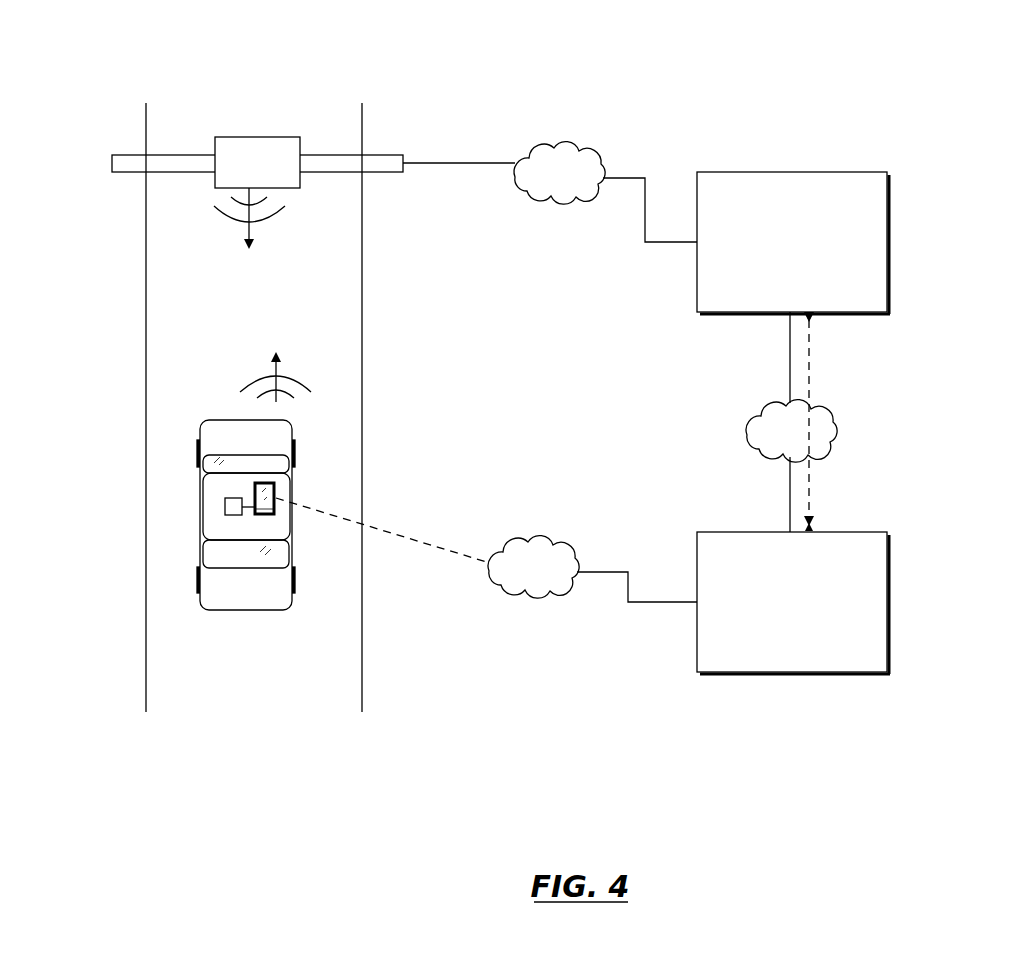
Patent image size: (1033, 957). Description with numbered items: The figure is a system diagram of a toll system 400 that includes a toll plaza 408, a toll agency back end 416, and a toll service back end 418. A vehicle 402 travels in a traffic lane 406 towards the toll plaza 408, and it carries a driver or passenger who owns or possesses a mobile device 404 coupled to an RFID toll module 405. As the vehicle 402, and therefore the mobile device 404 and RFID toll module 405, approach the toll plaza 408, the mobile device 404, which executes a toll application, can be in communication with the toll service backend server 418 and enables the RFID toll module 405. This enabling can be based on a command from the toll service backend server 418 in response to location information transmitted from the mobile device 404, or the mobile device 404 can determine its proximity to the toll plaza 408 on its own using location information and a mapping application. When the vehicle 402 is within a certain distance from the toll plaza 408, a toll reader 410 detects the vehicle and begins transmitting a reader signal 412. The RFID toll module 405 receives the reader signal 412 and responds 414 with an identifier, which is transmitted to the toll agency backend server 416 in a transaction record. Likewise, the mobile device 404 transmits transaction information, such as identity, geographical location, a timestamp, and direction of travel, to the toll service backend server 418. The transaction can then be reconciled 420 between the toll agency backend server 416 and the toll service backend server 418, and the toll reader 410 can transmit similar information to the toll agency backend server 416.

The toll system 400 is at (681, 76).
The vehicle 402 is at (198, 482).
The mobile device 404 is at (277, 489).
The RFID toll module 405 is at (225, 500).
The traffic lane 406 is at (232, 712).
The toll plaza 408 is at (138, 154).
The toll reader 410 is at (250, 137).
The reader signal 412 is at (281, 208).
The response 414 is at (308, 391).
The toll agency backend server 416 is at (757, 172).
The toll service backend server 418 is at (757, 532).
The transaction reconciliation 420 is at (809, 378).